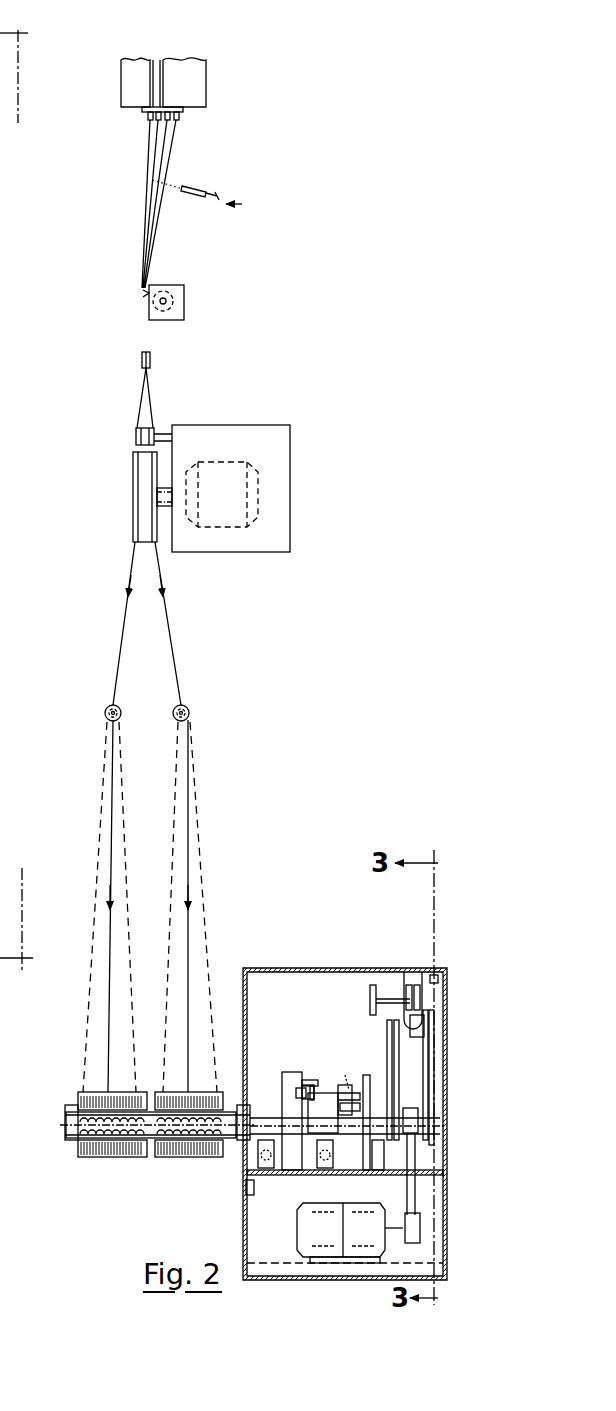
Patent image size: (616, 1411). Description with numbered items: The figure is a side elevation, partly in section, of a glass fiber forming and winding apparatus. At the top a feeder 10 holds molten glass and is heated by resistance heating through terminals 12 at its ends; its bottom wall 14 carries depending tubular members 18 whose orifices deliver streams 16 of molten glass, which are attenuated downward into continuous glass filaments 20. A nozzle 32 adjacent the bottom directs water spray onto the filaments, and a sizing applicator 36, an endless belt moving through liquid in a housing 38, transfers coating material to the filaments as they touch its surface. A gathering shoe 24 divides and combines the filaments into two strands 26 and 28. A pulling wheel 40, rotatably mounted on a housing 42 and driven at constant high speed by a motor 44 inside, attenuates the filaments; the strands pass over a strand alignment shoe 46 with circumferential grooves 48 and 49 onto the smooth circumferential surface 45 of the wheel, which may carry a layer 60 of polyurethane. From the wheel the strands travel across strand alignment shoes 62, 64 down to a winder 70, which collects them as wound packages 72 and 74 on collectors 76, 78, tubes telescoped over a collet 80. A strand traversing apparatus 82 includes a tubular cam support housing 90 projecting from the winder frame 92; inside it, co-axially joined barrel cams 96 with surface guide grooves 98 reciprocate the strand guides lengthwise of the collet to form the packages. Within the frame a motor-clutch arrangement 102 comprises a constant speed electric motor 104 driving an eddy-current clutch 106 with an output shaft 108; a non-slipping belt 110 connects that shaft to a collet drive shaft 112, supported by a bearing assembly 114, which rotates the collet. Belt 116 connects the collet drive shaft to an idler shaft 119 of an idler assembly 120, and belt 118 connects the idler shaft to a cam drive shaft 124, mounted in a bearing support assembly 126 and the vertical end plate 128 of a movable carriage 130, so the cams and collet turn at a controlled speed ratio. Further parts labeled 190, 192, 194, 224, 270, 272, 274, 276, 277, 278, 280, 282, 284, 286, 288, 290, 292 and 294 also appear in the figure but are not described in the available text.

The feeder 10 is at (207, 60).
The terminals 12 is at (160, 70).
The bottom wall 14 is at (146, 110).
The streams of molten glass 16 is at (155, 122).
The tubular members 18 is at (150, 118).
The continuous glass filaments 20 is at (160, 160).
The gathering shoe 24 is at (152, 357).
The strand 26 is at (144, 388).
The strand 28 is at (151, 388).
The nozzle 32 is at (200, 188).
The sizing applicator 36 is at (157, 290).
The housing 38 is at (184, 295).
The pulling wheel 40 is at (133, 471).
The housing 42 is at (235, 425).
The motor 44 is at (248, 462).
The smooth circumferential surface 45 is at (147, 475).
The strand alignment shoe 46 is at (136, 437).
The circumferential groove 48 is at (135, 427).
The circumferential groove 49 is at (152, 402).
The layer of polyurethane 60 is at (134, 496).
The strand alignment shoe 62 is at (115, 705).
The strand alignment shoe 64 is at (188, 705).
The winder 70 is at (298, 968).
The wound package 72 is at (125, 1092).
The wound package 74 is at (210, 1092).
The collector 76 is at (82, 1092).
The collector 78 is at (160, 1092).
The collet 80 is at (70, 1100).
The strand traversing apparatus 82 is at (68, 1137).
The cam support housing 90 is at (70, 1115).
The frame 92 is at (243, 985).
The barrel cams 96 is at (76, 1158).
The surface guide grooves 98 is at (96, 1160).
The motor-clutch arrangement 102 is at (300, 1233).
The constant speed electric motor 104 is at (323, 1229).
The eddy-current clutch 106 is at (362, 1229).
The output shaft 108 is at (395, 1250).
The belt 110 is at (418, 1200).
The collet drive shaft 112 is at (447, 1110).
The bearing assembly 114 is at (298, 1068).
The belt 116 is at (428, 1030).
The belt 118 is at (400, 1060).
The idler shaft 119 is at (430, 1020).
The idler assembly 120 is at (416, 985).
The cam drive shaft 124 is at (365, 1090).
The bearing support assembly 126 is at (286, 1075).
The vertical end plate 128 is at (418, 1120).
The movable carriage 130 is at (380, 1150).
The post 190 is at (370, 1170).
The end bushing 192 is at (236, 1155).
The foot 194 is at (272, 1168).
The bushing 224 is at (250, 1188).
The gear plate 270 is at (430, 1010).
The gear 272 is at (395, 1085).
The wall opening 274 is at (440, 970).
The lever bracket 276 is at (372, 985).
The lever arm 277 is at (412, 1000).
The lever arm 278 is at (420, 1000).
The pin 280 is at (312, 1090).
The plate 282 is at (318, 1086).
The pin 284 is at (300, 1101).
The clutch body 286 is at (352, 1095).
The foot 288 is at (330, 1168).
The clutch arm 290 is at (350, 1095).
The clutch housing 292 is at (358, 1092).
The pin 294 is at (347, 1090).